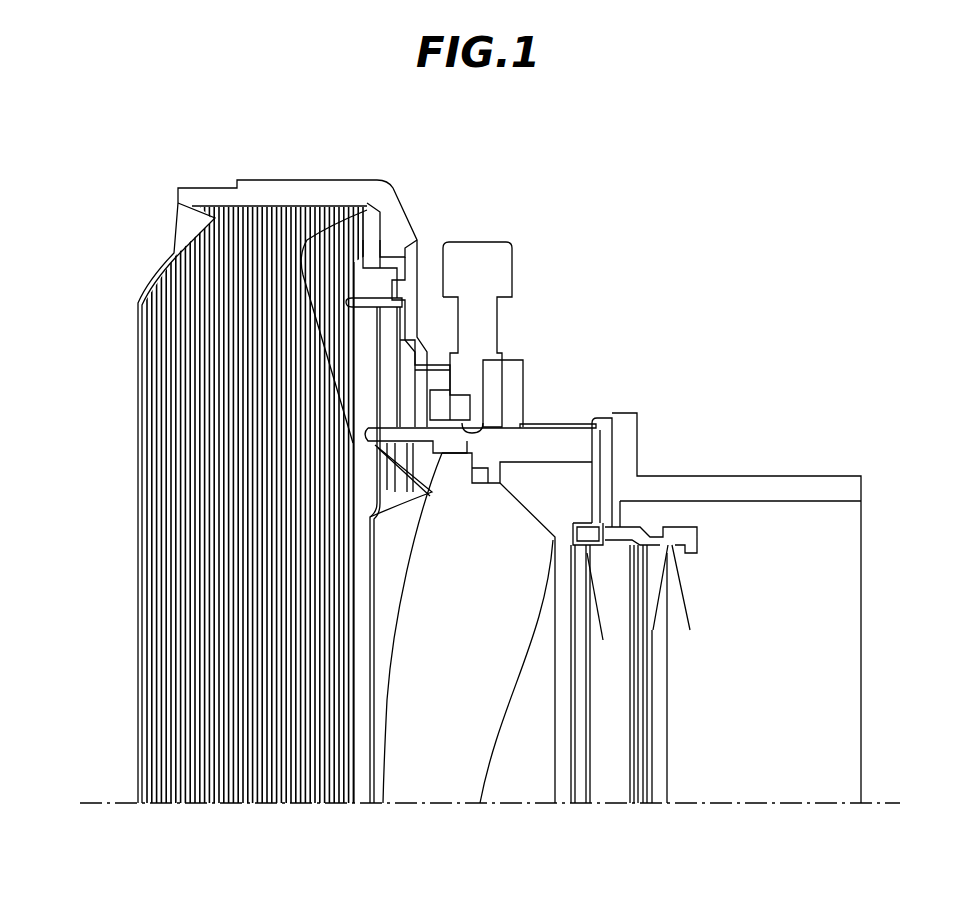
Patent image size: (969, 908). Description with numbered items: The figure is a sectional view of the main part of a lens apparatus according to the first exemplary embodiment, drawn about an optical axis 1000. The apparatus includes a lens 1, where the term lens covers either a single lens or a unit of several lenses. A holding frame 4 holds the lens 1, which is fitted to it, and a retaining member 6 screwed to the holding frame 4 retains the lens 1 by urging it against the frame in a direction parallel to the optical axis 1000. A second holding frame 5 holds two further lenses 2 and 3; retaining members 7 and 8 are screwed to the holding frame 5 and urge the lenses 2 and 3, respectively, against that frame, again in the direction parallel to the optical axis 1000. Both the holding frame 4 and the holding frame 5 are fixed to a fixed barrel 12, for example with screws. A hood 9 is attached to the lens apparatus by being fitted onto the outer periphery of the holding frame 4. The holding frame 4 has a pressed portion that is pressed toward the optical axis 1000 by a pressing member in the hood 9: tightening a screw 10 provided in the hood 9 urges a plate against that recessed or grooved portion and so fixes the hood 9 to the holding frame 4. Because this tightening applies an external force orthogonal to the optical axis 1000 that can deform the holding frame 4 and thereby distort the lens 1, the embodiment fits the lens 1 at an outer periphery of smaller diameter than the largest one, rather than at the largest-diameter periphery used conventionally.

The optical axis 1000 is at (100, 800).
The lens 1 is at (435, 710).
The lens 2 is at (603, 640).
The lens 3 is at (657, 770).
The holding frame 4 is at (558, 445).
The holding frame 5 is at (600, 435).
The retaining member 6 is at (425, 330).
The retaining member 7 is at (583, 555).
The retaining member 8 is at (678, 545).
The hood 9 is at (272, 255).
The screw 10 is at (487, 262).
The fixed barrel 12 is at (695, 488).